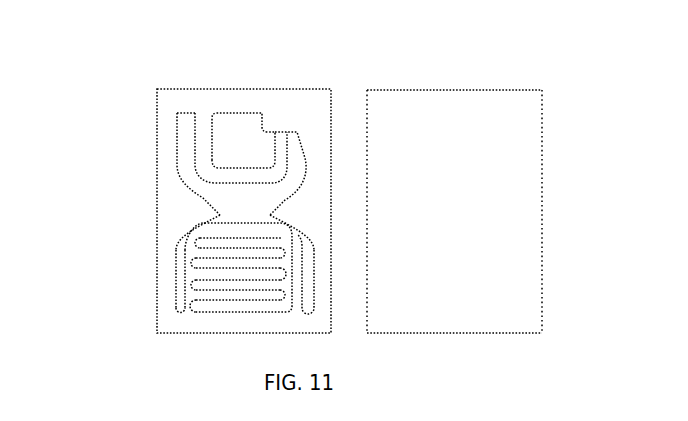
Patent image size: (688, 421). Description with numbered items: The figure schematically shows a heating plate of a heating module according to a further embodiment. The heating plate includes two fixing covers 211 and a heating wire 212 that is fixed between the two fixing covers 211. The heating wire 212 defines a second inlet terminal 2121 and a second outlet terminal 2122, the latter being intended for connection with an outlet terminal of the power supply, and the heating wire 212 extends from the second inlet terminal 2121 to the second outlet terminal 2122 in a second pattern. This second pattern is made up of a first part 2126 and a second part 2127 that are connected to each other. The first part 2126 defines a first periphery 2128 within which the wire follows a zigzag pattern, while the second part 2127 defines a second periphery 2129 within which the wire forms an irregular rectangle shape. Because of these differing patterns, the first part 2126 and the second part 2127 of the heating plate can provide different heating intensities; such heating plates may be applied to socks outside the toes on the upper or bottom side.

The fixing cover 211 is at (303, 95).
The heating wire 212 is at (219, 214).
The second inlet terminal 2121 is at (249, 110).
The second outlet terminal 2122 is at (294, 129).
The first part 2126 is at (175, 270).
The second part 2127 is at (177, 131).
The first periphery 2128 is at (175, 289).
The second periphery 2129 is at (177, 112).